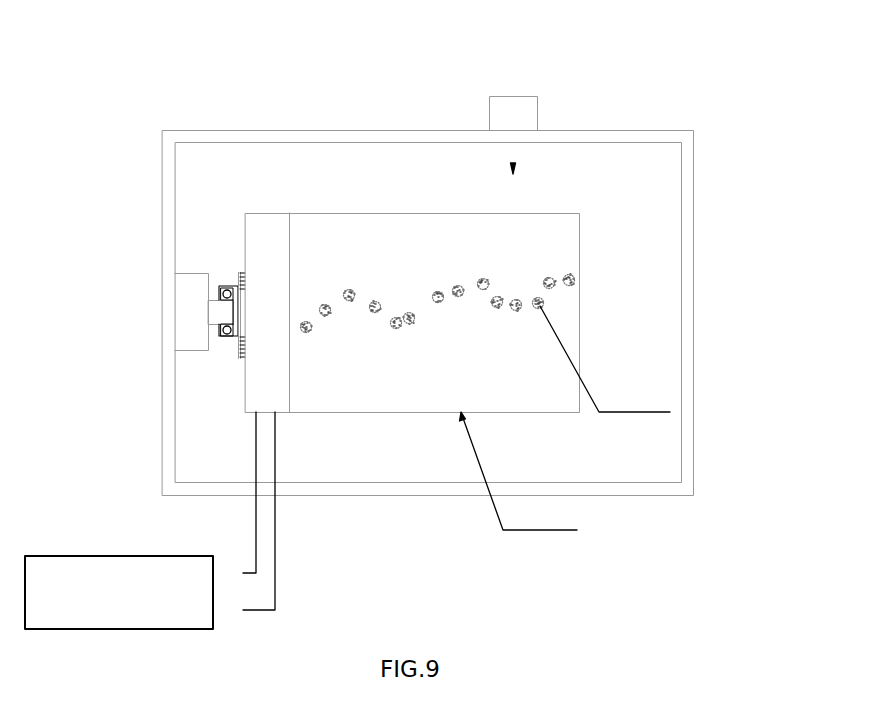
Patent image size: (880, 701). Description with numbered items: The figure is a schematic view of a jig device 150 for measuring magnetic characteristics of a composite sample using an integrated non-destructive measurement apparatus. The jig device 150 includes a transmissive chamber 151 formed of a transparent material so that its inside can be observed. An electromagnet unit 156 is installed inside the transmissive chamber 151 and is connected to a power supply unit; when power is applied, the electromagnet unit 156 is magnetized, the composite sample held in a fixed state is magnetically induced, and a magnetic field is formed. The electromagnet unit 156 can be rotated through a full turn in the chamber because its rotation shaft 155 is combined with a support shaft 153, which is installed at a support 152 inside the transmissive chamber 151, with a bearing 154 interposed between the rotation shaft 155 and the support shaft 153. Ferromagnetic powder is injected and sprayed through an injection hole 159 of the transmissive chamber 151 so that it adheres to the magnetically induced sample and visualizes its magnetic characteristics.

The jig device for measuring magnetic characteristics 150 is at (400, 322).
The transmissive chamber 151 is at (693, 183).
The support 152 is at (192, 281).
The support shaft 153 is at (218, 312).
The bearing 154 is at (227, 335).
The rotation shaft 155 is at (230, 287).
The electromagnet unit 156 is at (267, 219).
The injection hole 159 is at (537, 96).